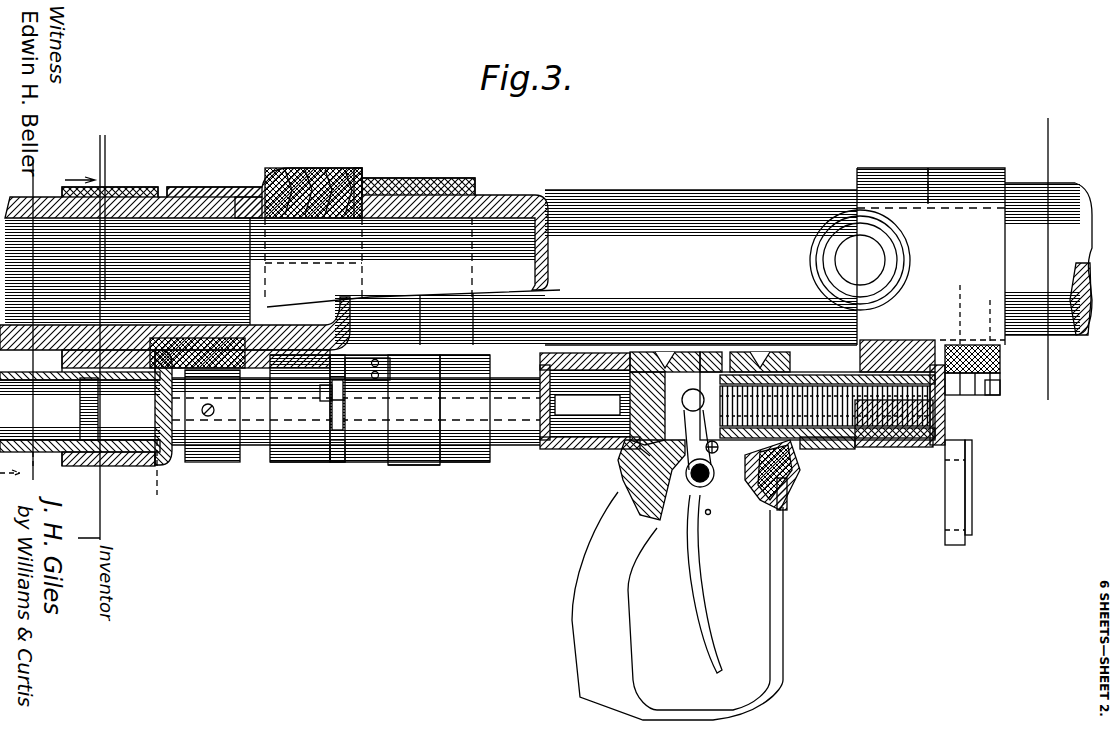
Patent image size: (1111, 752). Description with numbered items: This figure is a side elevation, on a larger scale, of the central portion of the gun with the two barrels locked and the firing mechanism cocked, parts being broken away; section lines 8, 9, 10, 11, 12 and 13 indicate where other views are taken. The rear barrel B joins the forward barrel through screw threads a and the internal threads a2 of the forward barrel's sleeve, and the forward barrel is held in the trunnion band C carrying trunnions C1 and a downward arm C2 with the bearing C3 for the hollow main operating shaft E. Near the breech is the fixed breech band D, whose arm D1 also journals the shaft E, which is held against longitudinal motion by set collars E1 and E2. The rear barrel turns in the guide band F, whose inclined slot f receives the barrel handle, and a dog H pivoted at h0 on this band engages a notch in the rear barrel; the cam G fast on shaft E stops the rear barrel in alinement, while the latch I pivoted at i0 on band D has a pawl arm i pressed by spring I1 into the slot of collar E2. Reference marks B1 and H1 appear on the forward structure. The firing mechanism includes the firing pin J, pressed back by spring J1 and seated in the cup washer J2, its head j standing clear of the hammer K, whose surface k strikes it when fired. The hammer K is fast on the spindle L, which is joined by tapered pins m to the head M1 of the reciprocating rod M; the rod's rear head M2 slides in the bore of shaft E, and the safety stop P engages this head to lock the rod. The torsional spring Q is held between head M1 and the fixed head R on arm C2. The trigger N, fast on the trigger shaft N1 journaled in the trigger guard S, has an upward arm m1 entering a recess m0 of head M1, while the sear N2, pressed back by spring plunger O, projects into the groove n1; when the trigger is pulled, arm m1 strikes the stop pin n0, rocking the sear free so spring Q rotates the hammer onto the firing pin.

The section line 8 is at (140, 498).
The section line 9 is at (80, 148).
The section line 10 is at (24, 471).
The section line 11 is at (82, 170).
The section line 12 is at (97, 346).
The section line 13 is at (1063, 123).
The slot f is at (118, 187).
The guide band F is at (160, 187).
The dog H is at (183, 190).
The rear barrel B is at (245, 187).
The pivot h0 is at (242, 200).
The threaded bushing B1 is at (340, 168).
The external screw threads a is at (358, 176).
The breech band D is at (445, 178).
The rear sleeve band H1 is at (272, 305).
The safety stop P is at (80, 398).
The rear head M2 is at (100, 462).
The cam G is at (222, 462).
The internal screw threads a2 is at (205, 399).
The set collar E2 is at (312, 462).
The latch I is at (338, 360).
The spring I1 is at (358, 365).
The pivot i0 is at (320, 392).
The arm D1 is at (425, 465).
The set collar E1 is at (477, 462).
The pawl arm i is at (345, 462).
The main operating shaft E is at (545, 449).
The reciprocating rod M is at (585, 395).
The head M1 is at (688, 372).
The tapered pins m is at (733, 372).
The torsional spring Q is at (845, 440).
The fixed head R is at (905, 447).
The bearing C3 is at (870, 450).
The spindle L is at (828, 449).
The arm m1 is at (625, 470).
The recess m0 is at (640, 455).
The trigger shaft N1 is at (690, 500).
The sear N2 is at (718, 505).
The axial groove n1 is at (717, 470).
The transverse stop pin n0 is at (712, 500).
The spring plunger O is at (762, 480).
The trigger guard S is at (572, 620).
The trigger N is at (710, 614).
The trunnion band C is at (950, 168).
The trunnions C1 is at (878, 258).
The arm C2 is at (895, 340).
The spring J1 is at (961, 302).
The firing pin J is at (985, 320).
The cup washer J2 is at (1002, 376).
The head j is at (1000, 388).
The hammer K is at (955, 550).
The striking surface k is at (972, 505).